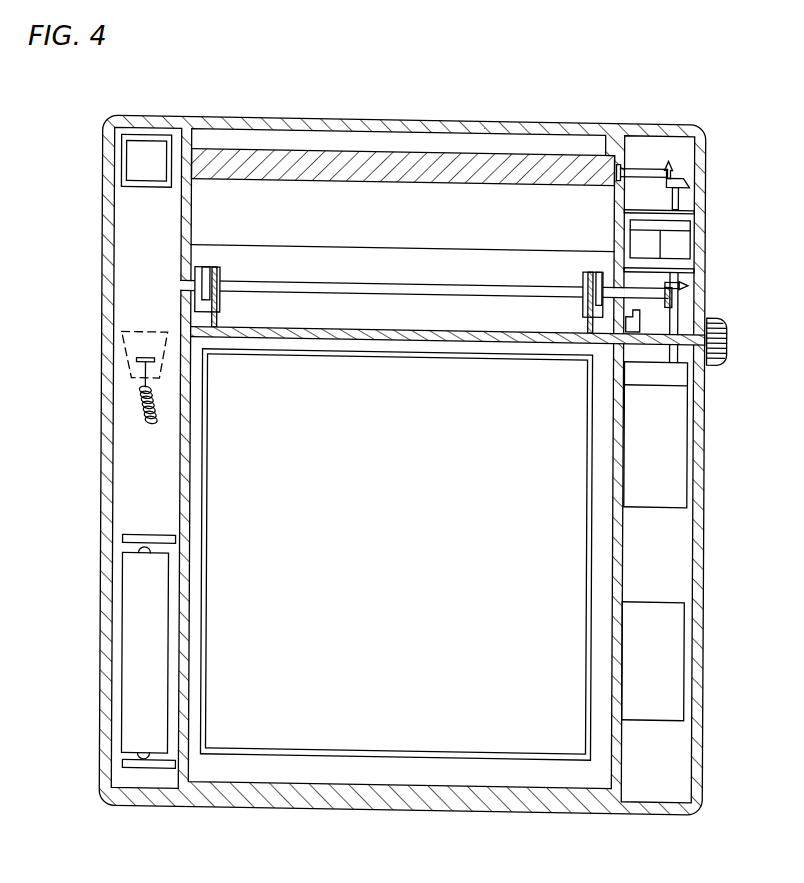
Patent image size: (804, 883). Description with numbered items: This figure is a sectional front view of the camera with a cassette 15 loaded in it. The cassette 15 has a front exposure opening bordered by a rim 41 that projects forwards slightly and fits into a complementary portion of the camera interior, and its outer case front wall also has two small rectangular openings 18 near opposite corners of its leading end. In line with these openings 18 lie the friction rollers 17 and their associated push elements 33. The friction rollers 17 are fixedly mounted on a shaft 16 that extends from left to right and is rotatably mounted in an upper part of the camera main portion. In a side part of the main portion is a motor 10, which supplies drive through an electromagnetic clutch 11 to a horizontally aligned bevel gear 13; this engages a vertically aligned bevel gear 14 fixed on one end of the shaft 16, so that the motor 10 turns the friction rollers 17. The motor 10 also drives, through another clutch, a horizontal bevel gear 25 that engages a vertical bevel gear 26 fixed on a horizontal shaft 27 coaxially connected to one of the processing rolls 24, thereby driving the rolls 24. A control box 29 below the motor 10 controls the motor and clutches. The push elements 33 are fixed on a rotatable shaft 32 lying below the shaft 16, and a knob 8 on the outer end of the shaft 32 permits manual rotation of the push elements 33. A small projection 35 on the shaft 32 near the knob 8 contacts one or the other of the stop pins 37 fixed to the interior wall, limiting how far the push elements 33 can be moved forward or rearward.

The knob 8 is at (726, 327).
The motor 10 is at (673, 443).
The electromagnetic clutch 11 is at (679, 243).
The bevel gear 13 is at (684, 270).
The bevel gear 14 is at (720, 318).
The cassette 15 is at (545, 772).
The shaft 16 is at (401, 290).
The friction rollers 17 is at (206, 275).
The openings 18 is at (213, 275).
The processing rolls 24 is at (546, 150).
The bevel gear 25 is at (679, 192).
The bevel gear 26 is at (675, 166).
The horizontal shaft 27 is at (641, 164).
The control box 29 is at (674, 644).
The shaft 32 is at (317, 339).
The push elements 33 is at (217, 323).
The projection 35 is at (626, 329).
The stop pins 37 is at (631, 313).
The rim 41 is at (434, 757).